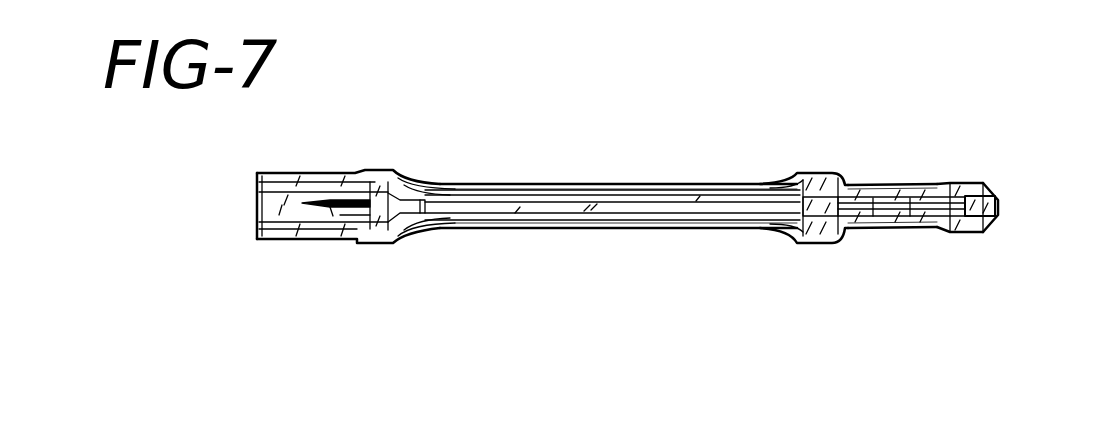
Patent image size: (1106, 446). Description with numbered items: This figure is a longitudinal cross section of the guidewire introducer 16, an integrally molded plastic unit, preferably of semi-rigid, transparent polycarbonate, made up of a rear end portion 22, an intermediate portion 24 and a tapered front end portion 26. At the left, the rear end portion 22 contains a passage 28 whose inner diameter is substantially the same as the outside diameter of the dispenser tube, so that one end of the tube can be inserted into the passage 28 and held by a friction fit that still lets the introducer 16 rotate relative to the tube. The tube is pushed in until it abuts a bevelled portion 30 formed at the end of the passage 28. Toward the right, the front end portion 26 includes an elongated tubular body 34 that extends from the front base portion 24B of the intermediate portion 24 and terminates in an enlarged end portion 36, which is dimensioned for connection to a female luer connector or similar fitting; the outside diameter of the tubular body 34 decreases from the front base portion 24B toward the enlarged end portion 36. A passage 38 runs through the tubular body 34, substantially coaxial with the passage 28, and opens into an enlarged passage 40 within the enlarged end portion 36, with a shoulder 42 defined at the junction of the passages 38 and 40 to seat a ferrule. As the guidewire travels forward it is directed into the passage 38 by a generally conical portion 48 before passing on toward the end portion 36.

The guidewire introducer 16 is at (466, 300).
The rear end portion 22 is at (298, 160).
The intermediate portion 24 is at (617, 178).
The front base portion 24B is at (820, 172).
The front end portion 26 is at (907, 172).
The passage 28 is at (300, 205).
The bevelled portion 30 is at (398, 178).
The tubular body 34 is at (901, 228).
The enlarged end portion 36 is at (980, 235).
The passage 38 is at (882, 228).
The enlarged passage 40 is at (995, 199).
The shoulder 42 is at (966, 238).
The conical portion 48 is at (812, 246).